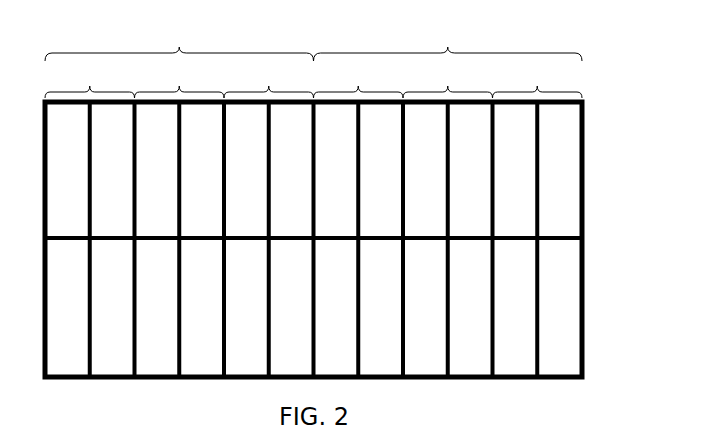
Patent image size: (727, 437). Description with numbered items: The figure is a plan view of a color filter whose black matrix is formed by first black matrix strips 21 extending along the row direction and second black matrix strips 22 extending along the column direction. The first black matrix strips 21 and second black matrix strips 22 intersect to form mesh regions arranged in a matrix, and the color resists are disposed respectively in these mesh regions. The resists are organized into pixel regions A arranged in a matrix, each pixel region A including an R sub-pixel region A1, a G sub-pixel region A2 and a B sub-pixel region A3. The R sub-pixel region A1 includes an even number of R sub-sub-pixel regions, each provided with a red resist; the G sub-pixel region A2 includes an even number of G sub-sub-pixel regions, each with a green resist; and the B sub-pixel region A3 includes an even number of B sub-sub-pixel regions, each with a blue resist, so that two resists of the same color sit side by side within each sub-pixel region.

The first black matrix strip 21 is at (549, 236).
The second black matrix strip 22 is at (582, 130).
The pixel region A is at (313, 42).
The R sub-pixel region A1 is at (224, 81).
The G sub-pixel region A2 is at (314, 81).
The B sub-pixel region A3 is at (403, 81).